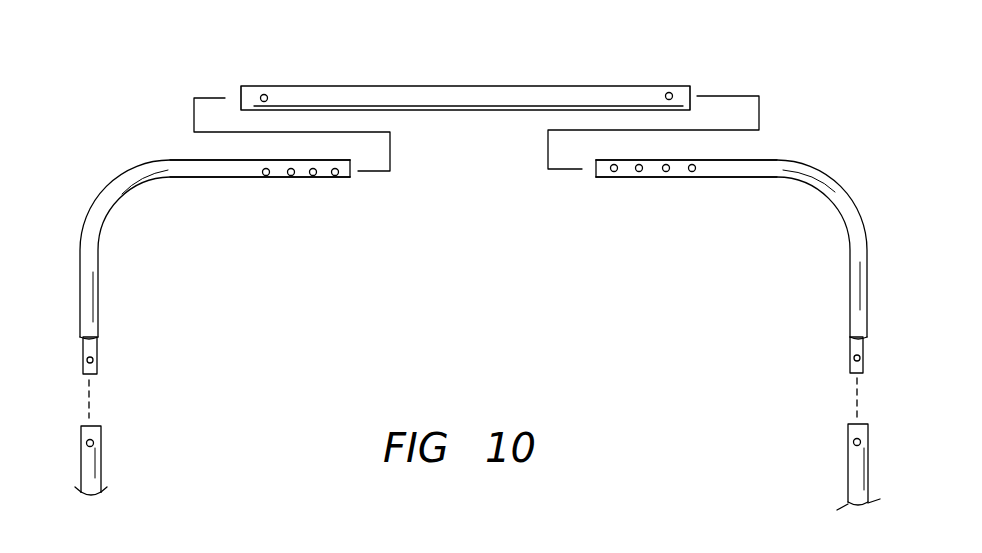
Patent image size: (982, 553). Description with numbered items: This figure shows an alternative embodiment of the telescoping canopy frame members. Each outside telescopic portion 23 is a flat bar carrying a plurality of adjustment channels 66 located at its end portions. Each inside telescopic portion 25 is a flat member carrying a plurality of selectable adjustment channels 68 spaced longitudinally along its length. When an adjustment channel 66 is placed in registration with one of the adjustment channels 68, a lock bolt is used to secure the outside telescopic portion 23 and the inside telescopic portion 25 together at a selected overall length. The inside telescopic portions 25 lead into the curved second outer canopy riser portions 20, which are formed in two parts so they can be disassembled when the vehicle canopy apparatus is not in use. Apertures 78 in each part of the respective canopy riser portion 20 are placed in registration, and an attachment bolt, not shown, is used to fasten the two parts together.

The second outer canopy riser portion 20 is at (108, 480).
The outside telescopic portion 23 is at (485, 103).
The inside telescopic portion 25 is at (230, 177).
The adjustment channel 66 is at (264, 94).
The selectable adjustment channel 68 is at (313, 176).
The aperture 78 is at (93, 360).